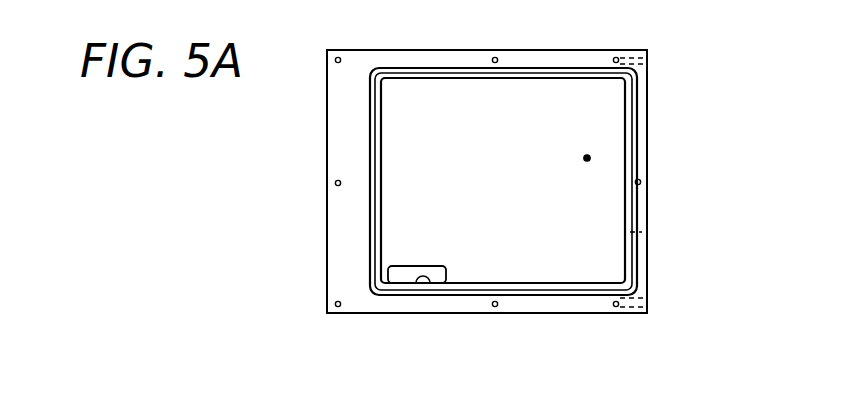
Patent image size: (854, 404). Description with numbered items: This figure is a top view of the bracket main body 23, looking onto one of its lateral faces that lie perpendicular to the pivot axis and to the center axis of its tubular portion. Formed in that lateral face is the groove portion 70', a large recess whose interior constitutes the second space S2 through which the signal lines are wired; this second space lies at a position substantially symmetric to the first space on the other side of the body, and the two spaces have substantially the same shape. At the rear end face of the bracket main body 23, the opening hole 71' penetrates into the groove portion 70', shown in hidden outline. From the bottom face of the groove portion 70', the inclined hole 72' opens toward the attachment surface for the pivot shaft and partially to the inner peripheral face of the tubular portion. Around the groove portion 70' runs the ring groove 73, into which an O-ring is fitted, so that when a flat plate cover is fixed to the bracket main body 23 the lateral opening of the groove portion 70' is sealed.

The bracket main body 23 is at (327, 273).
The ring groove 73 is at (636, 118).
The groove portion 70' is at (503, 231).
The second space S2 is at (587, 158).
The opening hole 71' is at (672, 182).
The inclined hole 72' is at (417, 325).